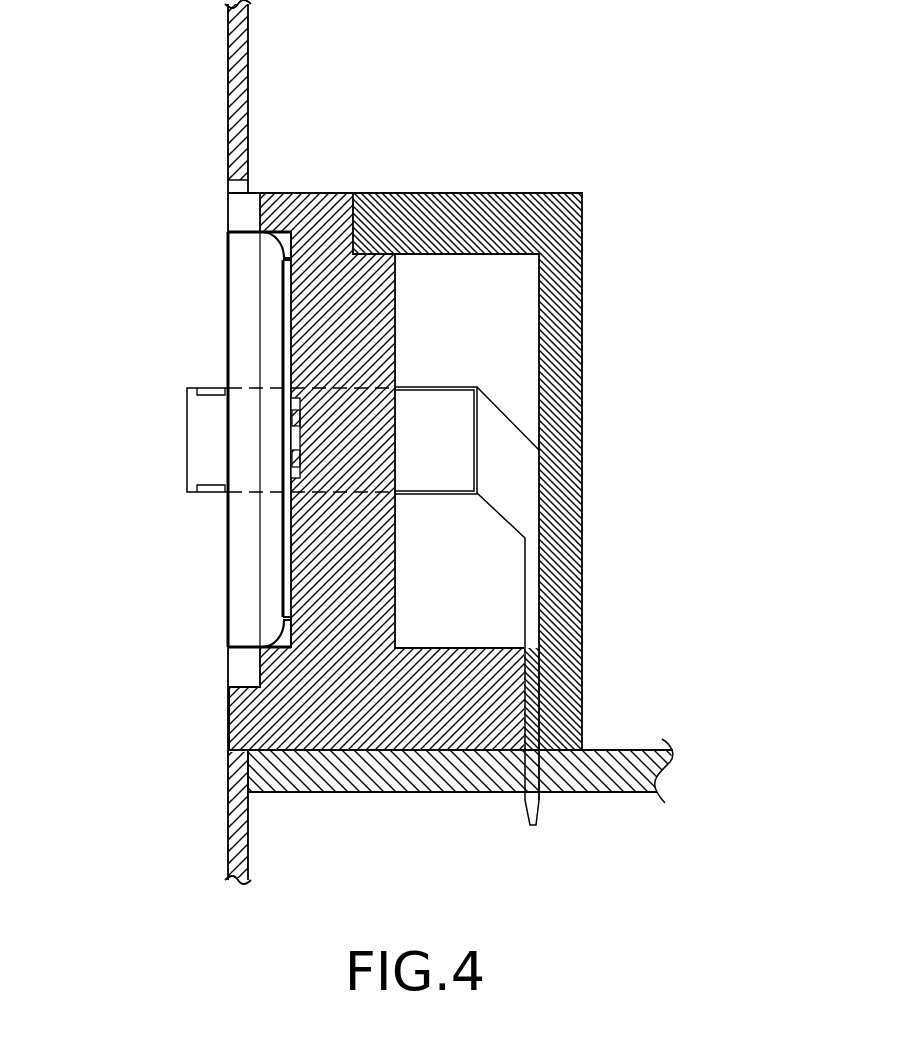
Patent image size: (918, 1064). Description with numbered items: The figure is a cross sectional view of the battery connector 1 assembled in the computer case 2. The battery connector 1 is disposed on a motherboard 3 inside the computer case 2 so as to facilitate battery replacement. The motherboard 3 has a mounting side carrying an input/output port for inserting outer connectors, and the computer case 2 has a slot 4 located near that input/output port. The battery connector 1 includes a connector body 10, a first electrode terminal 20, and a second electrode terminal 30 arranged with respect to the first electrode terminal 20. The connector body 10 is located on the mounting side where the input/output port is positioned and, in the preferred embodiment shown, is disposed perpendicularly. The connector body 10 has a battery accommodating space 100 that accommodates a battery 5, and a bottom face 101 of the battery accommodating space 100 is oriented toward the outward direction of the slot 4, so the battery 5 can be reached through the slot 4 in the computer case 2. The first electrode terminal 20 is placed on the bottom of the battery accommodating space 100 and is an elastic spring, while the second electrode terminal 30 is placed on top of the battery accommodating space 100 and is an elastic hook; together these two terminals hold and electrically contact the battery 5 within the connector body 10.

The battery connector 1 is at (467, 172).
The computer case 2 is at (233, 92).
The motherboard 3 is at (627, 760).
The slot 4 is at (233, 187).
The battery 5 is at (242, 323).
The connector body 10 is at (275, 714).
The first electrode terminal 20 is at (283, 419).
The second electrode terminal 30 is at (203, 438).
The battery accommodating space 100 is at (288, 230).
The bottom face 101 is at (290, 555).